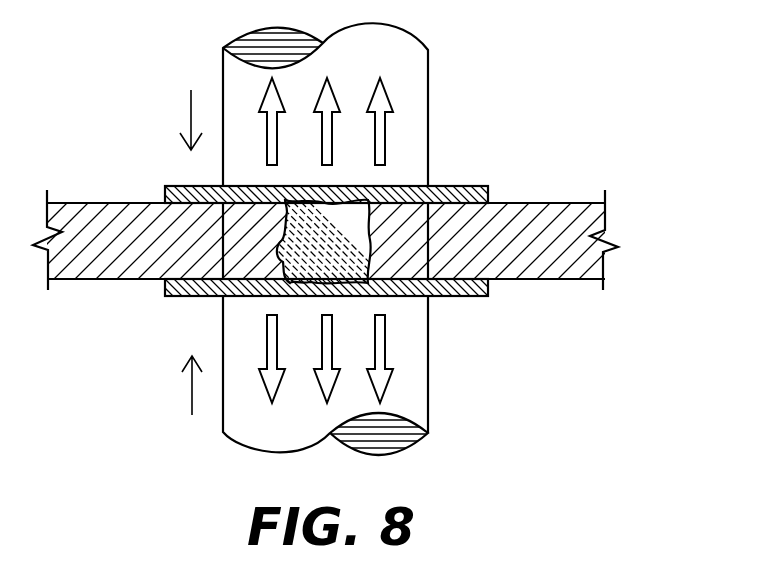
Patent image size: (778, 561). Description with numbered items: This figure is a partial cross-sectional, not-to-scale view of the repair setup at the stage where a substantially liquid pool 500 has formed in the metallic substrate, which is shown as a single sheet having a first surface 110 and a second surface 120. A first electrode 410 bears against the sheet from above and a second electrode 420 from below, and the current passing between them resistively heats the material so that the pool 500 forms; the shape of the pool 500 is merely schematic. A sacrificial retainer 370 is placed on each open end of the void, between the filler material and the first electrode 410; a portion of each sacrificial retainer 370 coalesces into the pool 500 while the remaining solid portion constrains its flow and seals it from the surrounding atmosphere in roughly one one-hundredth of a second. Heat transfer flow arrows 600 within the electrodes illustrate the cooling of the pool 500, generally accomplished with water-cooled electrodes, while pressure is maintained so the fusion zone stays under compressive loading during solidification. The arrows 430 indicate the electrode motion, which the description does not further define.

The first surface 110 is at (510, 203).
The second surface 120 is at (508, 280).
The sacrificial retainer 370 is at (165, 186).
The first electrode 410 is at (428, 58).
The second electrode 420 is at (428, 410).
The tool motion direction 430 is at (192, 113).
The substantially liquid pool 500 is at (282, 232).
The heat transfer flow arrows 600 is at (385, 150).